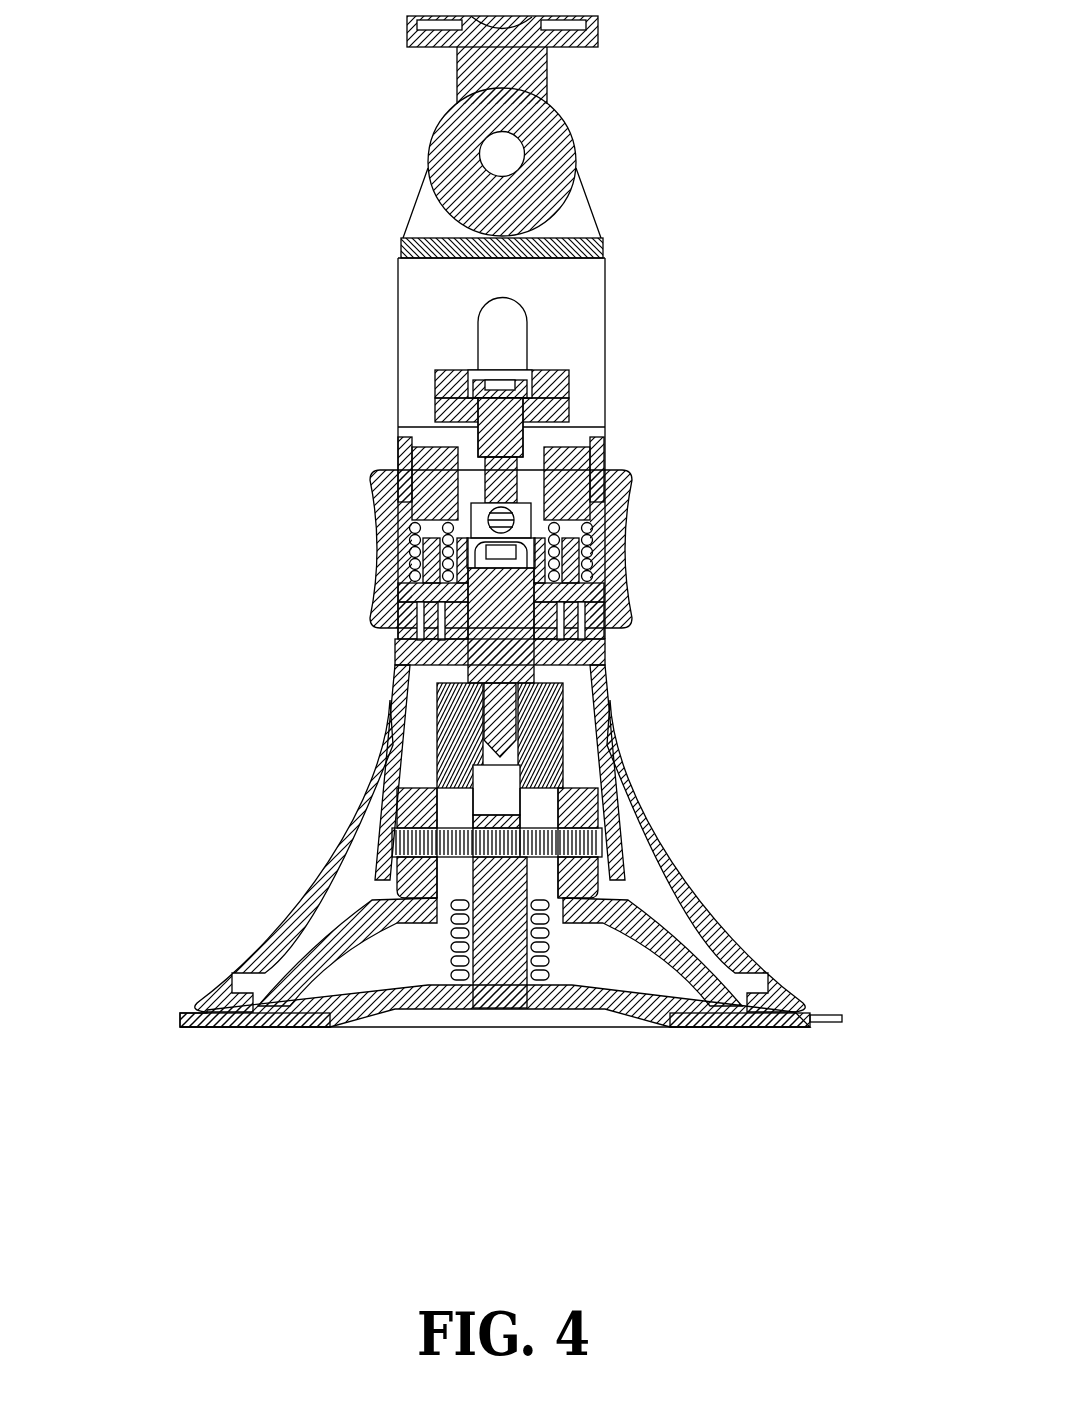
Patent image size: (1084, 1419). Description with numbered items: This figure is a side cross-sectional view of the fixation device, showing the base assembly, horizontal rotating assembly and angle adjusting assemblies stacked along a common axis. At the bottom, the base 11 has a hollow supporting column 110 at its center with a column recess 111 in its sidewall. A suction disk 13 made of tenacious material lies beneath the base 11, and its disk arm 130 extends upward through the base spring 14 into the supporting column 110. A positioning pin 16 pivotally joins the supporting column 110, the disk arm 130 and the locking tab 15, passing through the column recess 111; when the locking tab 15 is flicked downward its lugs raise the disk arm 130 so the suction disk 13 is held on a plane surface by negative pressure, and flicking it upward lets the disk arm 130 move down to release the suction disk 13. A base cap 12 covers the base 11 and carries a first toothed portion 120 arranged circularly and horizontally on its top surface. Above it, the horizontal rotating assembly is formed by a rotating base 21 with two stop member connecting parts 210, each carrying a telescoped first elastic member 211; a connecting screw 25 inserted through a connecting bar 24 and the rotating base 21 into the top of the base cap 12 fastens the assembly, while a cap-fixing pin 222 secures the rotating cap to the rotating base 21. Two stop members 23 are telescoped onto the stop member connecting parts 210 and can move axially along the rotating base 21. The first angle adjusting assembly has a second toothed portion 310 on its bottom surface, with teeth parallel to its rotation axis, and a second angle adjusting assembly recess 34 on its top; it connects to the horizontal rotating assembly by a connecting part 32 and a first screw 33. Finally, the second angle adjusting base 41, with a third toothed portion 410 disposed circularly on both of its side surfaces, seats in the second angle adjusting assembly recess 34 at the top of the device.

The second angle adjusting base 41 is at (600, 33).
The third toothed portion 410 is at (577, 135).
The second angle adjusting assembly recess 34 is at (580, 230).
The second toothed portion 310 is at (580, 308).
The connecting part 32 is at (440, 380).
The first screw 33 is at (440, 410).
The stop member 23 is at (380, 487).
The cap-fixing pin 222 is at (507, 513).
The first elastic member 211 is at (410, 550).
The connecting screw 25 is at (588, 558).
The stop member connecting part 210 is at (403, 565).
The rotating base 21 is at (396, 607).
The connecting bar 24 is at (597, 603).
The first toothed portion 120 is at (402, 636).
The supporting column 110 is at (557, 720).
The locking tab 15 is at (410, 803).
The column recess 111 is at (583, 820).
The positioning pin 16 is at (587, 841).
The base cap 12 is at (303, 915).
The base 11 is at (210, 1003).
The suction disk 13 is at (802, 1009).
The base spring 14 is at (418, 1010).
The disk arm 130 is at (543, 952).